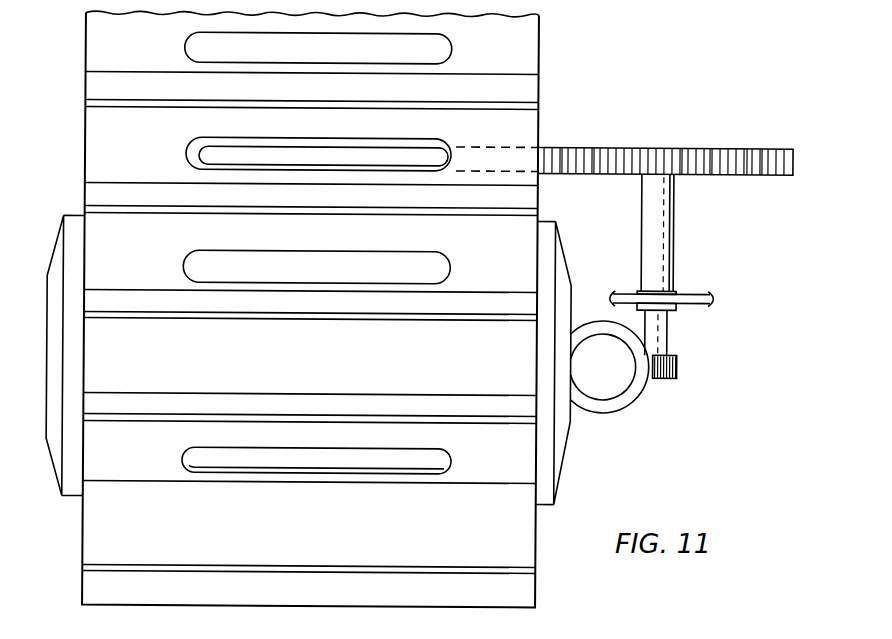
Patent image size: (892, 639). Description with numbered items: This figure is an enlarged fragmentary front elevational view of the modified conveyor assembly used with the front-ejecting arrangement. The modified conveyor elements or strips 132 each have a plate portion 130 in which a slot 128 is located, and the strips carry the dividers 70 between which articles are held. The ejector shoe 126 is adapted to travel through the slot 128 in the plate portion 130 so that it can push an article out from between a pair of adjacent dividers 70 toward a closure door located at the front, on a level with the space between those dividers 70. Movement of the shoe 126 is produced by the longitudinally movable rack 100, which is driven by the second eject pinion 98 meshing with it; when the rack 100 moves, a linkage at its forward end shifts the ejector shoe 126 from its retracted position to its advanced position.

The divider 70 is at (458, 106).
The second eject pinion 98 is at (660, 163).
The rack 100 is at (554, 147).
The ejector shoe 126 is at (312, 158).
The slot 128 is at (283, 34).
The plate portion 130 is at (309, 287).
The modified conveyor element or strip 132 is at (85, 143).